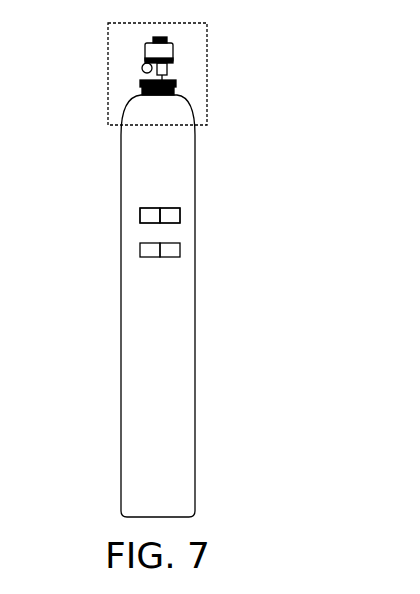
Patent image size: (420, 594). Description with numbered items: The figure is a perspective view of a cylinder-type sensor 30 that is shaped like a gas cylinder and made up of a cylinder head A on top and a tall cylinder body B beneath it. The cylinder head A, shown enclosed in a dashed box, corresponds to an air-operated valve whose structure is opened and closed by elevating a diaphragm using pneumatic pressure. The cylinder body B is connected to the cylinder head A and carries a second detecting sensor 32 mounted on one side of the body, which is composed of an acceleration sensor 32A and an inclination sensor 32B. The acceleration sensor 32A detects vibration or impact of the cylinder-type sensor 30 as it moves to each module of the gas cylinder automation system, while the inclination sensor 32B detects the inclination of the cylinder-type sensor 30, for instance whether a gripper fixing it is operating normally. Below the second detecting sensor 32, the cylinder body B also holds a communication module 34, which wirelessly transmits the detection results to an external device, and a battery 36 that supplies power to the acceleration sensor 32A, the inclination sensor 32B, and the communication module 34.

The cylinder-type sensor 30 is at (352, 121).
The cylinder head A is at (207, 72).
The cylinder body B is at (180, 292).
The second detecting sensor 32 is at (170, 185).
The acceleration sensor 32A is at (140, 213).
The inclination sensor 32B is at (180, 213).
The communication module 34 is at (140, 250).
The battery 36 is at (180, 248).